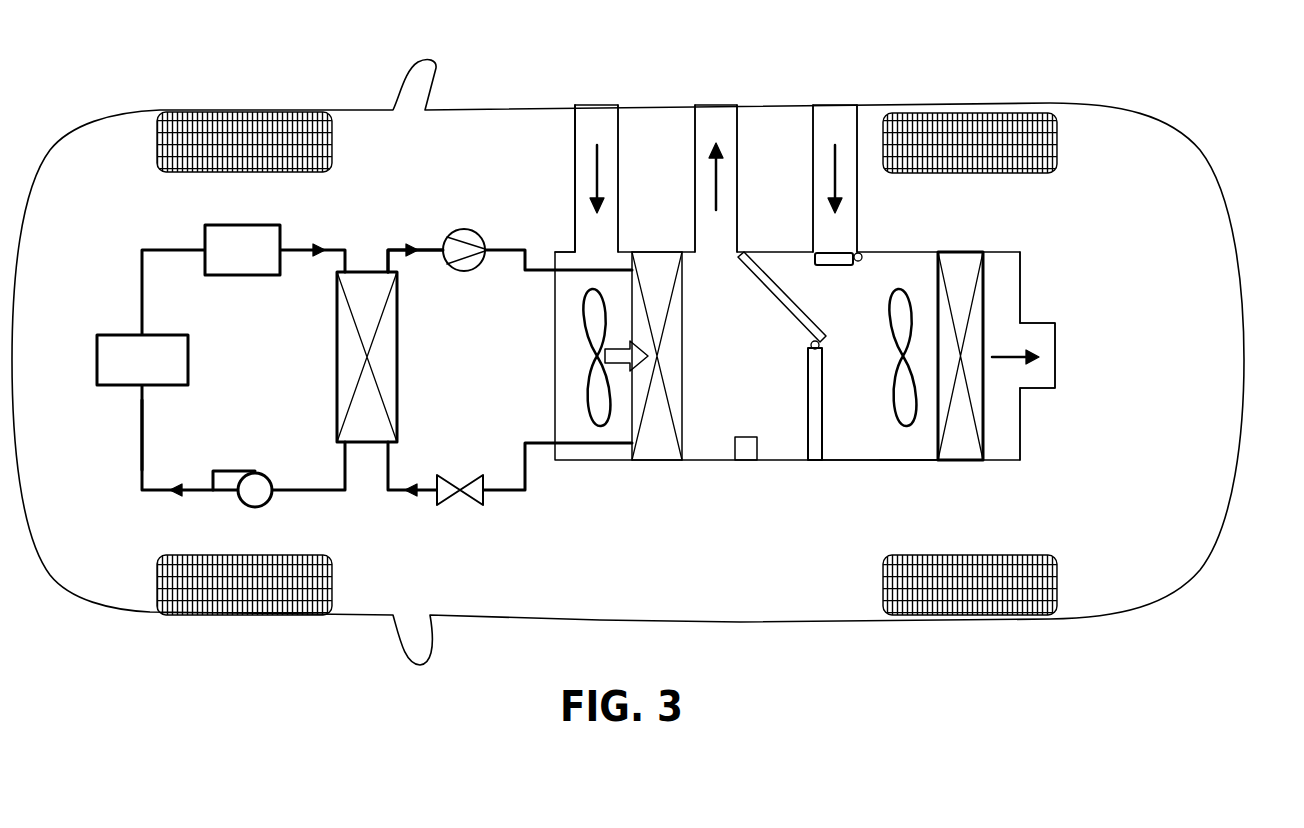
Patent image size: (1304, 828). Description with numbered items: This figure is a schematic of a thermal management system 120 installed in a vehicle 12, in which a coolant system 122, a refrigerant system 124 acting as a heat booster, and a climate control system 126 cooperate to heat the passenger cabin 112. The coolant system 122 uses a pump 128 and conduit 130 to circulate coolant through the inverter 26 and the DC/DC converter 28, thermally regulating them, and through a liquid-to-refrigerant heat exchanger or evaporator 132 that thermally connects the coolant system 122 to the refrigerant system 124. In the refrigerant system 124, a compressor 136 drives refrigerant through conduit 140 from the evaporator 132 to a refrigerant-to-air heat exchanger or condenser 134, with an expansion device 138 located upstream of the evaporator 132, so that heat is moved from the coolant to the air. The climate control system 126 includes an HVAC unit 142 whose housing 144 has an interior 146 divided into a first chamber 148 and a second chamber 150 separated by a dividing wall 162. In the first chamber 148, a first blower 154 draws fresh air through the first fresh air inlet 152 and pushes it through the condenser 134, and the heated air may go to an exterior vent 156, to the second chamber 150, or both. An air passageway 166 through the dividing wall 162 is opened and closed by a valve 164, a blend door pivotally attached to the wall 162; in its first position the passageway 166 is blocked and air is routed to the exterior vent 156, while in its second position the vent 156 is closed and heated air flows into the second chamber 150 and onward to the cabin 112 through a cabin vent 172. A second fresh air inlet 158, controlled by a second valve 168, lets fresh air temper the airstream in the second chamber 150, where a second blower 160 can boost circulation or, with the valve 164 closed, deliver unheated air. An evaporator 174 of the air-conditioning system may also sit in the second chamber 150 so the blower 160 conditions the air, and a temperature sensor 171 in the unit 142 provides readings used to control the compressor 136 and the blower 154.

The vehicle 12 is at (352, 109).
The inverter 26 is at (204, 240).
The DC/DC converter 28 is at (120, 335).
The passenger cabin 112 is at (668, 320).
The thermal management system 120 is at (530, 138).
The coolant system 122 is at (230, 383).
The refrigerant system 124 is at (510, 373).
The climate control system 126 is at (799, 314).
The pump 128 is at (256, 490).
The conduit 130 is at (141, 435).
The liquid-to-refrigerant heat exchanger (evaporator) 132 is at (350, 360).
The refrigerant-to-air heat exchanger (condenser) 134 is at (657, 452).
The compressor 136 is at (466, 229).
The expansion device 138 is at (446, 487).
The conduit 140 is at (400, 249).
The HVAC unit 142 is at (1022, 430).
The housing 144 is at (1022, 290).
The interior 146 is at (865, 435).
The first chamber 148 is at (712, 288).
The second chamber 150 is at (913, 437).
The first fresh air inlet 152 is at (575, 130).
The first blower 154 is at (600, 422).
The exterior vent 156 is at (695, 130).
The second fresh air inlet 158 is at (813, 130).
The second blower 160 is at (902, 420).
The dividing wall 162 is at (780, 291).
The valve 164 is at (815, 452).
The air passageway 166 is at (778, 393).
The second valve 168 is at (832, 254).
The temperature sensor 171 is at (750, 450).
The cabin vent 172 is at (1057, 357).
The evaporator 174 is at (960, 270).